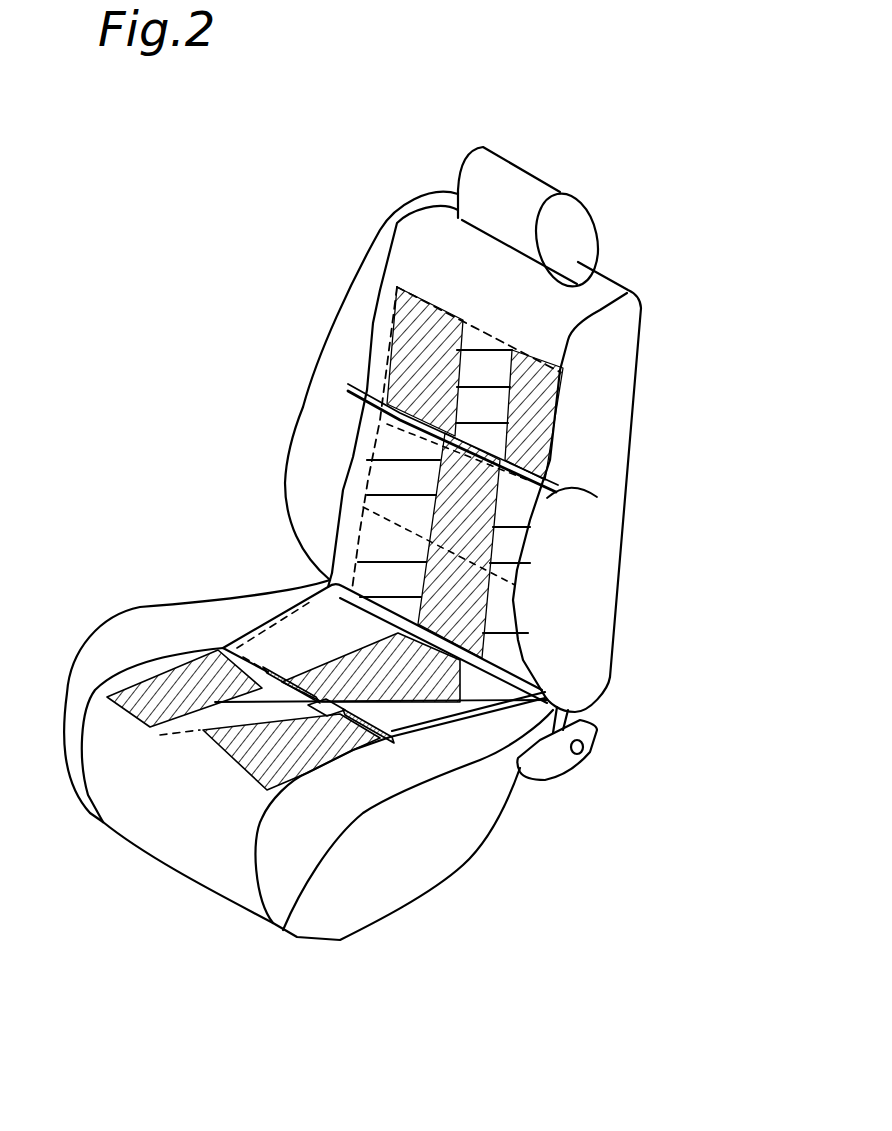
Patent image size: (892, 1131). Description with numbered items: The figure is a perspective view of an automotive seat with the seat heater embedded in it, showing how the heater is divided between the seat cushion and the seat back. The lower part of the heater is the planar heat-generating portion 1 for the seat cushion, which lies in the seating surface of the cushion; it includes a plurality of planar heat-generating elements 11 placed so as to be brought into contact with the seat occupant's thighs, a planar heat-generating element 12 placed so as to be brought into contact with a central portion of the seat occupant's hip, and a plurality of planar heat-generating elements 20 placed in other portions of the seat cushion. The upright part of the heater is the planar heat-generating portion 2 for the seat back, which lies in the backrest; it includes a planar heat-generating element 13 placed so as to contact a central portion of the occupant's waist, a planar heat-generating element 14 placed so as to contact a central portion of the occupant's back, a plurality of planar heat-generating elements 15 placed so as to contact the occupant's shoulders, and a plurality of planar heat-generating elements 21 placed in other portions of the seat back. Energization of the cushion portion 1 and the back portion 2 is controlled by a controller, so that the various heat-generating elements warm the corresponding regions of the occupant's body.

The planar heat-generating portion for the seat cushion 1 is at (385, 798).
The planar heat-generating portion for the seat back 2 is at (373, 560).
The planar heat-generating elements 11 is at (230, 705).
The planar heat-generating element 12 is at (400, 712).
The planar heat-generating element 13 is at (513, 640).
The planar heat-generating element 14 is at (500, 492).
The planar heat-generating elements 15 is at (563, 380).
The planar heat-generating elements 20 is at (520, 768).
The planar heat-generating elements 21 is at (362, 565).